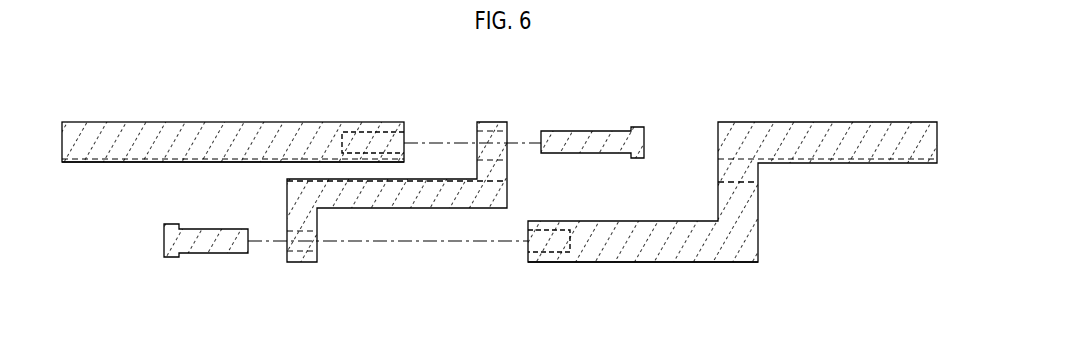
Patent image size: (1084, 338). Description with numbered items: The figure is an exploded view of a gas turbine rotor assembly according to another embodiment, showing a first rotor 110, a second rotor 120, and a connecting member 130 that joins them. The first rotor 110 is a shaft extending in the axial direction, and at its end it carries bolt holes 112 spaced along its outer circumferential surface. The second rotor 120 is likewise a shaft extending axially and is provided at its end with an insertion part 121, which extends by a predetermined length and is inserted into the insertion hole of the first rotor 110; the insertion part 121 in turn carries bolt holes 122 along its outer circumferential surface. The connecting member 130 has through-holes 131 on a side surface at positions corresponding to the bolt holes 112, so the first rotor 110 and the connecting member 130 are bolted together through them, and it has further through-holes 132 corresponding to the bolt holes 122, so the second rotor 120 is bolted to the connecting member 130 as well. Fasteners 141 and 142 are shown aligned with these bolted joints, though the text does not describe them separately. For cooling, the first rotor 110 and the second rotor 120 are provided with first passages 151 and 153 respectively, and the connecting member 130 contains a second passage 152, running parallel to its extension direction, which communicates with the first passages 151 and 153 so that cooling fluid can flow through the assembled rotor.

The first rotor 110 is at (238, 122).
The bolt holes 112 is at (392, 131).
The second rotor 120 is at (830, 122).
The insertion part 121 is at (658, 250).
The bolt holes 122 is at (557, 253).
The connecting member 130 is at (494, 122).
The through-holes 131 is at (497, 131).
The through-holes 132 is at (305, 262).
The first fastening pin 141 is at (641, 127).
The second fastening pin 142 is at (168, 258).
The first passage 151 is at (117, 161).
The second passage 152 is at (411, 190).
The first passage 153 is at (740, 152).